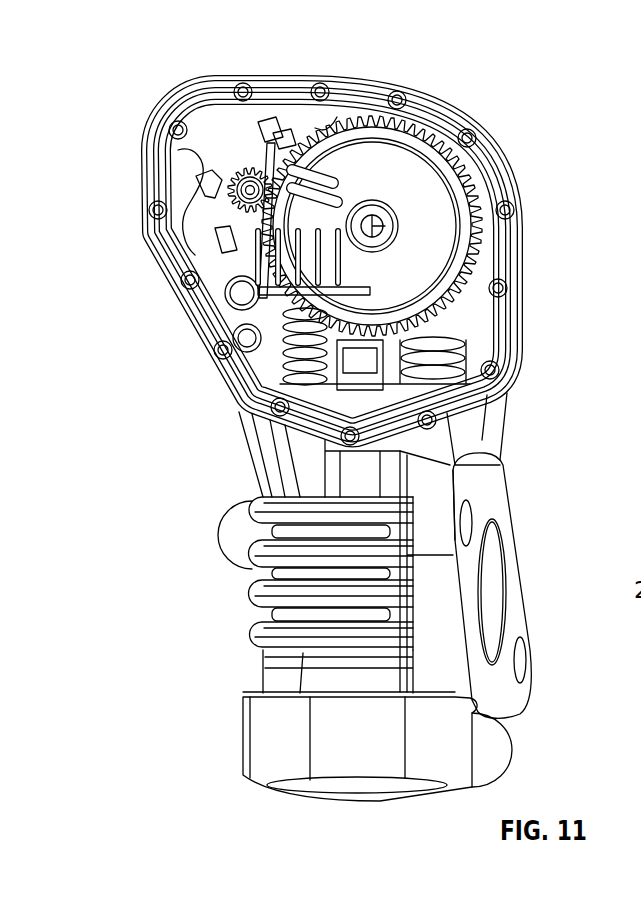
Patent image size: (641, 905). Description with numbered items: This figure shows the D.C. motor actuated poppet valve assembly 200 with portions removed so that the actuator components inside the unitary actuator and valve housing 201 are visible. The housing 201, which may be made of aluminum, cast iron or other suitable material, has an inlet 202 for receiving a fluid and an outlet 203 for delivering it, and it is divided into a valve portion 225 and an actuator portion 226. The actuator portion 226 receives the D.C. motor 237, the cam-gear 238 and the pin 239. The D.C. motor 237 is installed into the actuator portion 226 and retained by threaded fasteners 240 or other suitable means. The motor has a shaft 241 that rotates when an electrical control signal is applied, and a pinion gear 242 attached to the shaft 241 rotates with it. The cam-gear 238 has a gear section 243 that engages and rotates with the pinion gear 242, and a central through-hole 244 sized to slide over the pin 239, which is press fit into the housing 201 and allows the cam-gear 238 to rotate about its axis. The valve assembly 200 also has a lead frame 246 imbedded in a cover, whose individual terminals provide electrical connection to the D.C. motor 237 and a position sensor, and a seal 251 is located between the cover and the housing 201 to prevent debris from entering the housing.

The D.C. motor actuated poppet valve assembly 200 is at (243, 490).
The unitary actuator and valve housing 201 is at (250, 590).
The inlet 202 is at (394, 790).
The outlet 203 is at (492, 594).
The valve portion 225 is at (560, 672).
The actuator portion 226 is at (524, 370).
The D.C. motor 237 is at (202, 222).
The cam-gear 238 is at (425, 198).
The pin 239 is at (372, 226).
The threaded fasteners 240 is at (236, 294).
The shaft 241 is at (232, 178).
The pinion gear 242 is at (243, 128).
The gear section 243 is at (490, 157).
The central through-hole 244 is at (420, 340).
The lead frame 246 is at (210, 243).
The seal 251 is at (505, 275).